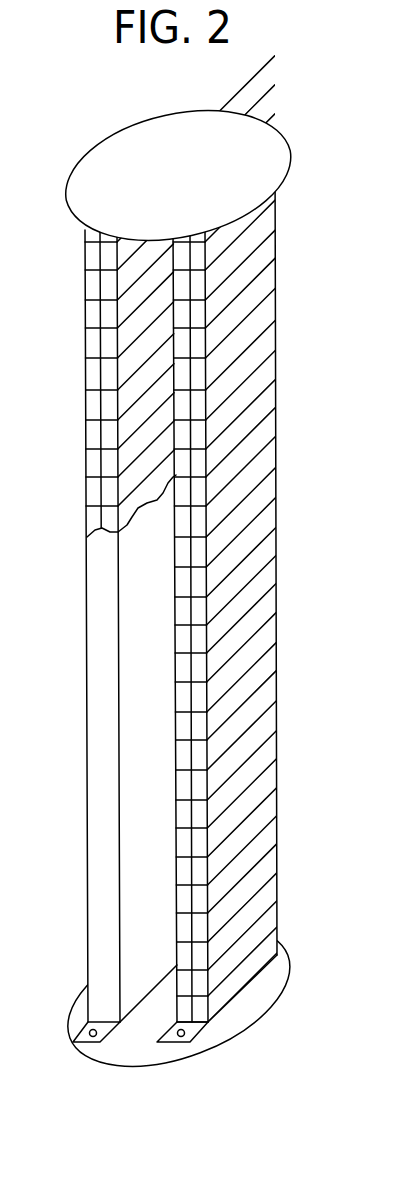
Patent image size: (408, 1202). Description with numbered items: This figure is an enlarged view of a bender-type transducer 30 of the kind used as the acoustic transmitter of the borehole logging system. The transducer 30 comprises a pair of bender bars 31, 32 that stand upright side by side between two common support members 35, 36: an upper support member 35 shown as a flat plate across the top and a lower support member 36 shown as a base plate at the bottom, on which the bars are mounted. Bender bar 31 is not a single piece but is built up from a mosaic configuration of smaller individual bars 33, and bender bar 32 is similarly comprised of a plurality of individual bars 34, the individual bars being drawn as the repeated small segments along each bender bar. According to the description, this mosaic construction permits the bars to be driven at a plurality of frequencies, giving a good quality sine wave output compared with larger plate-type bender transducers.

The transducer 30 is at (284, 220).
The bender bar 31 is at (85, 260).
The bender bar 32 is at (276, 248).
The individual bars 33 is at (92, 378).
The individual bars 34 is at (272, 377).
The support member 35 is at (208, 145).
The support member 36 is at (275, 977).